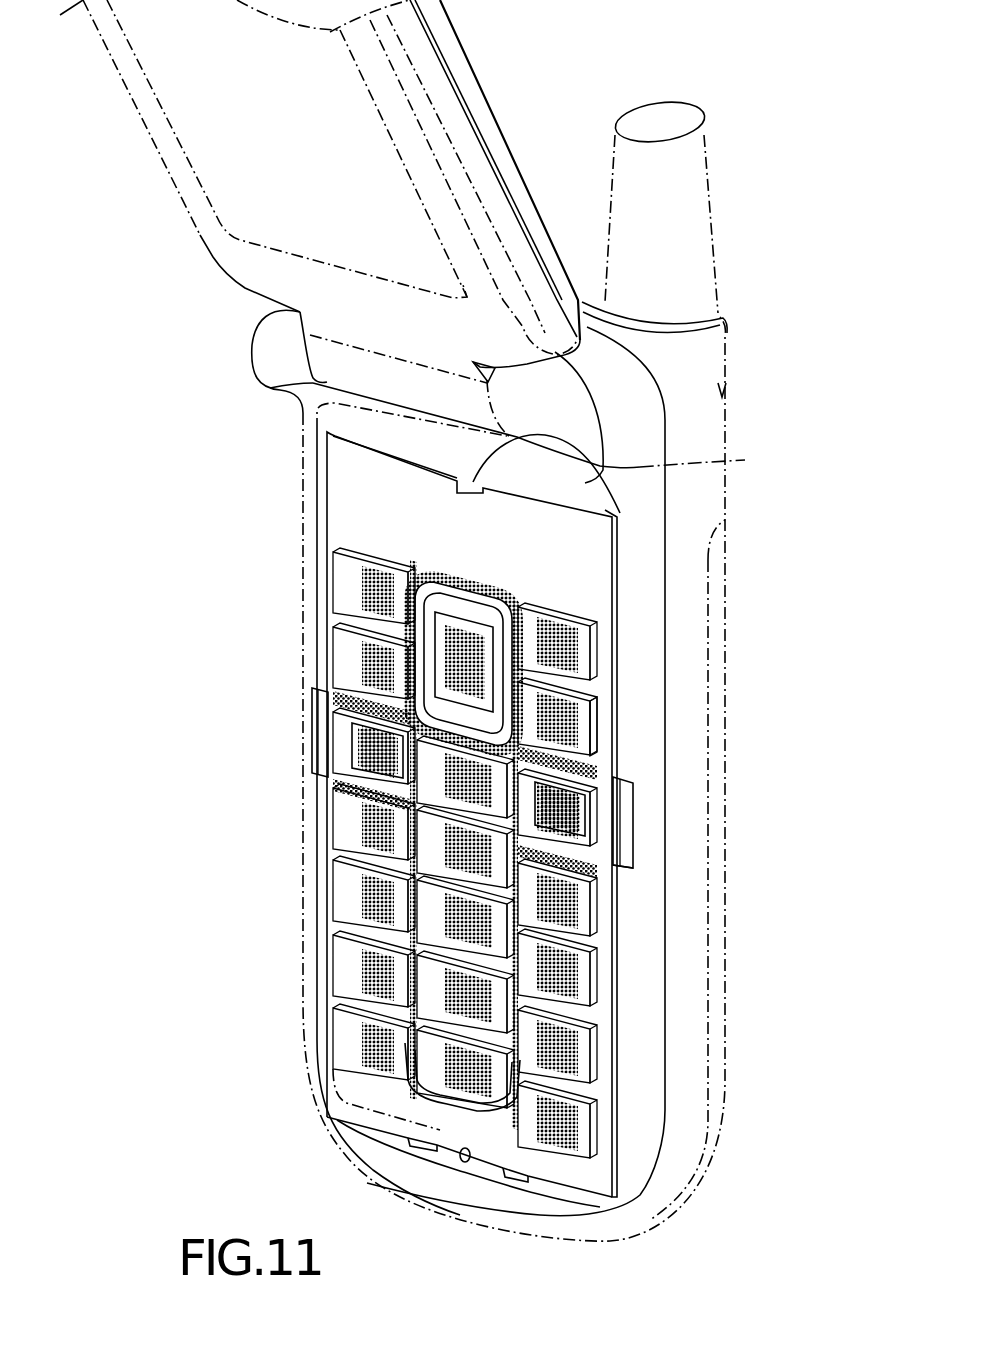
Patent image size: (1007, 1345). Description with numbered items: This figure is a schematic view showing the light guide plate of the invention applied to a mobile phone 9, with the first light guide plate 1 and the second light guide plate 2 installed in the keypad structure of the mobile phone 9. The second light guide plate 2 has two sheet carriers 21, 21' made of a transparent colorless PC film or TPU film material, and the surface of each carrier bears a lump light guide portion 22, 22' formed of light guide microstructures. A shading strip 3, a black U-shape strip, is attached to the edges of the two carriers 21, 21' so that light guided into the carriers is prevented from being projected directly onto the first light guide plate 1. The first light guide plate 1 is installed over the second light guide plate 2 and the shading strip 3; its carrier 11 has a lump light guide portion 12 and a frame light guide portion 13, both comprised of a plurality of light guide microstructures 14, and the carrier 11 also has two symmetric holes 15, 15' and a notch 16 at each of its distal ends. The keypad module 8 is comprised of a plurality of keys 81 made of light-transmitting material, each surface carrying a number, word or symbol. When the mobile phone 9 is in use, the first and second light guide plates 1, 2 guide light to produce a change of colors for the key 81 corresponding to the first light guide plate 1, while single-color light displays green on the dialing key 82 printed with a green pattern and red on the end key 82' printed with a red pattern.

The first light guide plate 1 is at (325, 470).
The second light guide plate 2 is at (640, 843).
The shading strip 3 is at (340, 782).
The keypad module 8 is at (578, 612).
The mobile phone 9 is at (693, 413).
The carrier 11 is at (585, 552).
The lump light guide portion 12 is at (587, 720).
The frame light guide portion 13 is at (415, 566).
The light guide microstructures 14 is at (557, 708).
The symmetric hole 15 is at (303, 744).
The symmetric hole 15' is at (655, 859).
The notch 16 is at (745, 460).
The sheet carrier 21 is at (250, 753).
The sheet carrier 21' is at (714, 881).
The lump light guide portion 22 is at (303, 750).
The lump light guide portion 22' is at (672, 809).
The key 81 is at (545, 990).
The dialing key 82 is at (314, 695).
The end key 82' is at (665, 769).